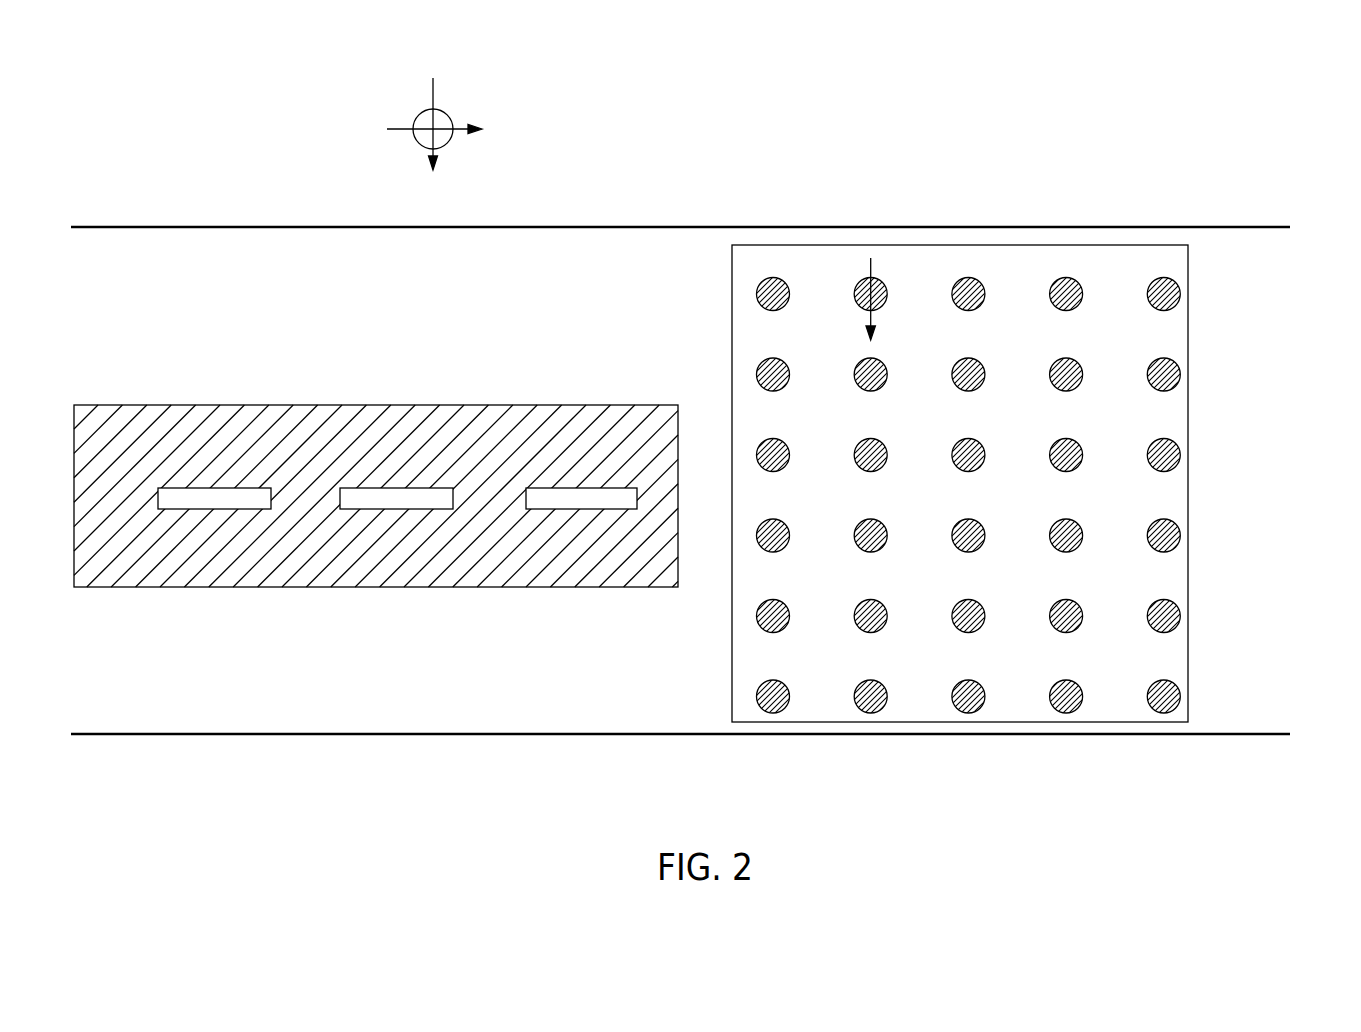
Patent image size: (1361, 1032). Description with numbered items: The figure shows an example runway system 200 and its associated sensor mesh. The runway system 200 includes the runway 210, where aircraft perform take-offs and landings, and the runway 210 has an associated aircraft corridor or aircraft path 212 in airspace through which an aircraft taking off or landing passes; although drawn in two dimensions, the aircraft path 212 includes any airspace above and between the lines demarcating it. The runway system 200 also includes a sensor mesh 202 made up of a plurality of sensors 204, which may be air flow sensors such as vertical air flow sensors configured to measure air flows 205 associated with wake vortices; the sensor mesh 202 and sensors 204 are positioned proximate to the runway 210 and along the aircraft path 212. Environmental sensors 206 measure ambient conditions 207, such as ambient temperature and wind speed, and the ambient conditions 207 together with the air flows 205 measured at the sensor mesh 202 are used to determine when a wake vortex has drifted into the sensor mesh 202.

The runway system 200 is at (1237, 124).
The sensor mesh 202 is at (1188, 328).
The sensors 204 is at (886, 296).
The air flows 205 is at (870, 268).
The environmental sensors 206 is at (437, 116).
The ambient conditions 207 is at (423, 158).
The runway 210 is at (424, 405).
The aircraft path 212 is at (185, 227).